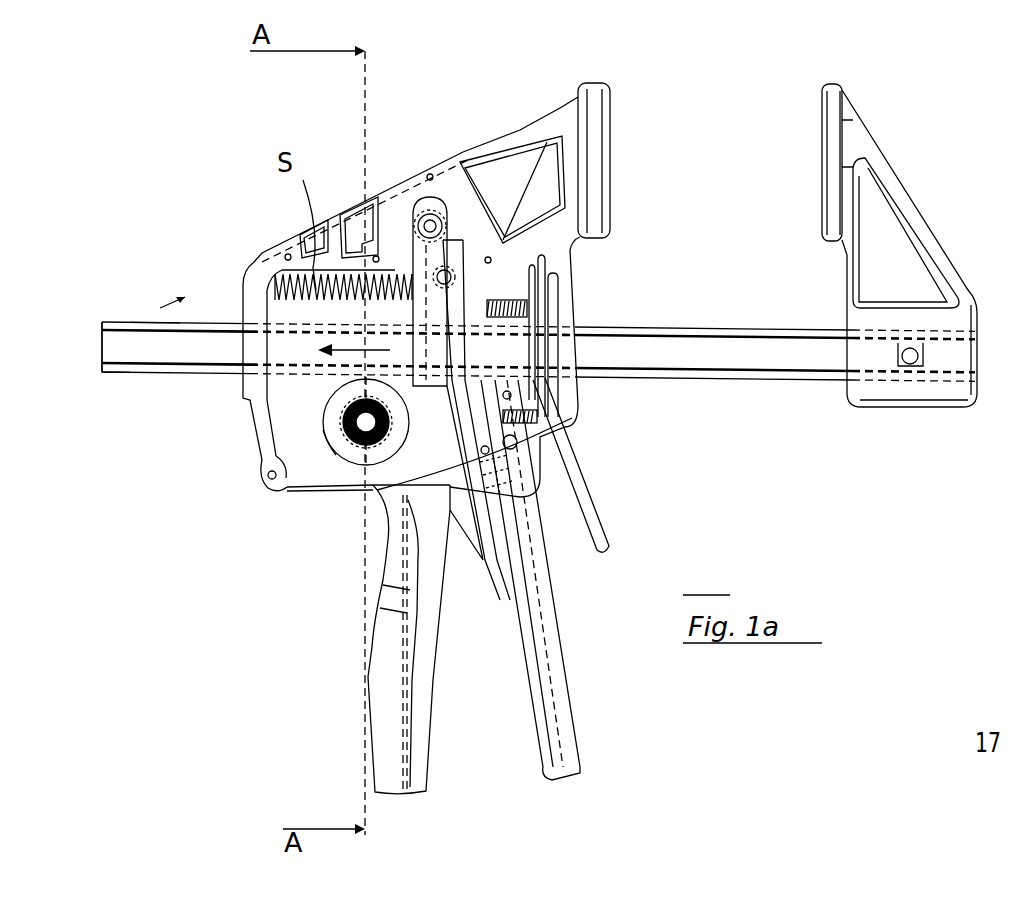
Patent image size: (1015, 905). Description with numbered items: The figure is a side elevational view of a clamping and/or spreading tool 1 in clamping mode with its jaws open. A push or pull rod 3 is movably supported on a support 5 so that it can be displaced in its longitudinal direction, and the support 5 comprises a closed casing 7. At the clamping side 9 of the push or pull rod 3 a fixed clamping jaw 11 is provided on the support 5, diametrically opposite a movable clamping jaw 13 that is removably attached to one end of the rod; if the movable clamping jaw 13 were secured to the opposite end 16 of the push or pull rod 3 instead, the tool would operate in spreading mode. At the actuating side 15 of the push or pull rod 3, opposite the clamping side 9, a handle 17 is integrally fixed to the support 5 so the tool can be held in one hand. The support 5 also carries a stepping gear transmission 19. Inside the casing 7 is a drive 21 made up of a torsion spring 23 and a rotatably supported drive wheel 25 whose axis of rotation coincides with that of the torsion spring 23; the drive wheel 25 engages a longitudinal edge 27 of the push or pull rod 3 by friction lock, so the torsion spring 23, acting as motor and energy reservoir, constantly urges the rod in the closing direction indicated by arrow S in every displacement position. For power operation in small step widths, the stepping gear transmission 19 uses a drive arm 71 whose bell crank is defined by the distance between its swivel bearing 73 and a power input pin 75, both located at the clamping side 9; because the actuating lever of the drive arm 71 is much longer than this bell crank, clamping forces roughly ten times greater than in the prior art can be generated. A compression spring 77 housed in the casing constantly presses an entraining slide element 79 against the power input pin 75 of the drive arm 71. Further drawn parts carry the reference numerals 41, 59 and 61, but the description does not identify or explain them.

The clamping and/or spreading tool 1 is at (950, 357).
The push or pull rod 3 is at (705, 357).
The support 5 is at (258, 256).
The closed casing 7 is at (318, 421).
The clamping side 9 is at (172, 286).
The fixed clamping jaw 11 is at (612, 105).
The movable clamping jaw 13 is at (867, 130).
The actuating side 15 is at (176, 426).
The opposite end 16 is at (115, 352).
The handle 17 is at (380, 677).
The stepping gear transmission 19 is at (410, 200).
The drive 21 is at (320, 418).
The torsion spring 23 is at (348, 460).
The drive wheel 25 is at (326, 453).
The longitudinal edge 27 is at (627, 380).
The connecting rod 41 is at (600, 497).
The guide lug 59 is at (548, 460).
The reinforcing rib 61 is at (505, 230).
The drive arm 71 is at (570, 706).
The swivel bearing 73 is at (433, 200).
The power input pin 75 is at (548, 226).
The compression spring 77 is at (346, 300).
The entraining slide element 79 is at (455, 515).